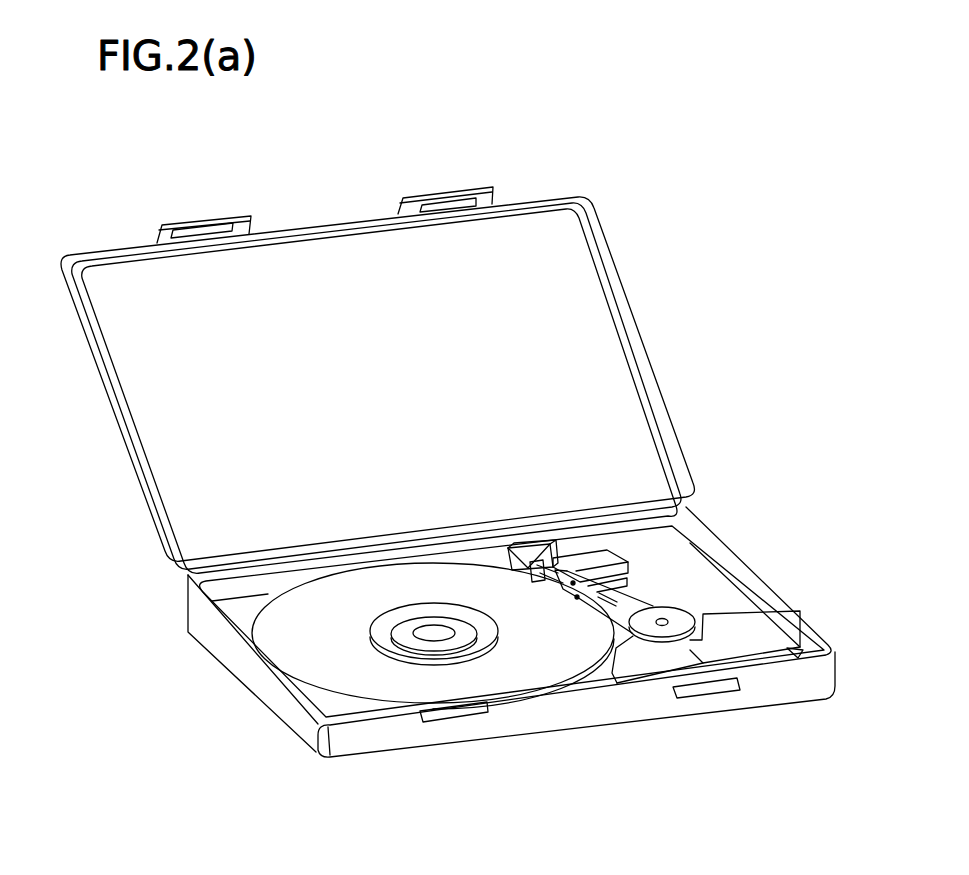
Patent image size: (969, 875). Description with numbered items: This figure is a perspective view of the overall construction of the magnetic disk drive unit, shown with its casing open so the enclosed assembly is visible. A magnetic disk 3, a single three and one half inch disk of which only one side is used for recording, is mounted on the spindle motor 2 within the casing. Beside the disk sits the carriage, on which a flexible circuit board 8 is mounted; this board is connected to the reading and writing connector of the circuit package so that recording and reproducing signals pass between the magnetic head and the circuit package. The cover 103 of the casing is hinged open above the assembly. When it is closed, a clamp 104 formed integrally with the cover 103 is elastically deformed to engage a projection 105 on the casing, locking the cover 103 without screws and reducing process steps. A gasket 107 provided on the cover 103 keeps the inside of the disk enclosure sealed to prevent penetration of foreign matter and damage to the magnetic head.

The spindle motor 2 is at (370, 634).
The magnetic disk 3 is at (530, 665).
The flexible circuit board 8 is at (680, 565).
The cover 103 is at (600, 355).
The clamp 104 is at (175, 236).
The projection 105 is at (718, 697).
The gasket 107 is at (738, 543).